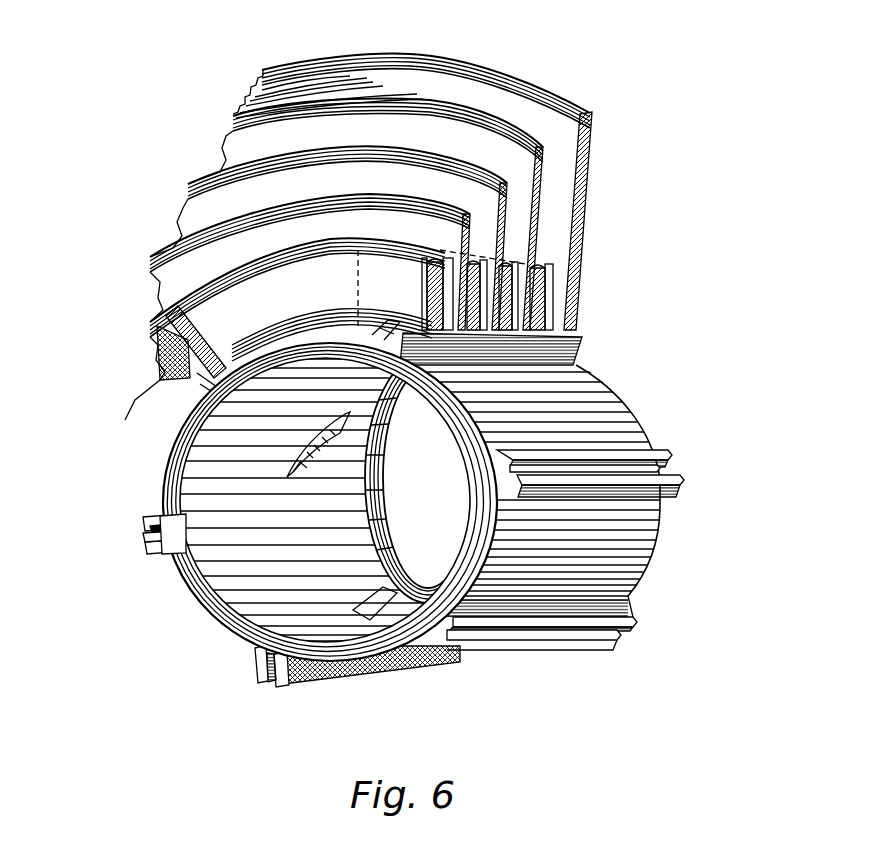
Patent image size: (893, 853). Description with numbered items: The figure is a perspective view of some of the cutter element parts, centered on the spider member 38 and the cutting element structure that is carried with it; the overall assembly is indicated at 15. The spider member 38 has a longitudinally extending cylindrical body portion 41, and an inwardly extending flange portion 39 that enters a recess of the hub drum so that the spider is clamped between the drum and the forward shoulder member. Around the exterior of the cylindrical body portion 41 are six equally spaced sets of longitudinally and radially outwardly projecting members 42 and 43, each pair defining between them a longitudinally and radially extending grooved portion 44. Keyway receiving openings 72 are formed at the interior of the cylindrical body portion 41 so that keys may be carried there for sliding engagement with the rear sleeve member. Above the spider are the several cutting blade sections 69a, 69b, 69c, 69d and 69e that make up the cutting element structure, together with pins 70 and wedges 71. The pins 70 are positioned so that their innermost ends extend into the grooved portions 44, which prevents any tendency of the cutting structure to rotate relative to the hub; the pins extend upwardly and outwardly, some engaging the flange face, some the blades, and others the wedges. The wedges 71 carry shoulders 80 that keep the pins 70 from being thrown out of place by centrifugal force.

The stator core lamination stack 15 is at (508, 70).
The spider member 38 is at (640, 568).
The inwardly extending flange portion 39 is at (388, 514).
The cylindrical body portion 41 is at (578, 411).
The outwardly projecting member 42 is at (673, 452).
The outwardly projecting member 43 is at (680, 482).
The grooved portion 44 is at (652, 468).
The cutting blade section 69a is at (298, 66).
The cutting blade section 69b is at (234, 143).
The cutting blade section 69c is at (206, 197).
The cutting blade section 69d is at (198, 250).
The cutting blade section 69e is at (170, 323).
The pin 70 is at (550, 292).
The wedge 71 is at (420, 260).
The keyway receiving opening 72 is at (360, 603).
The shoulder 80 is at (434, 262).